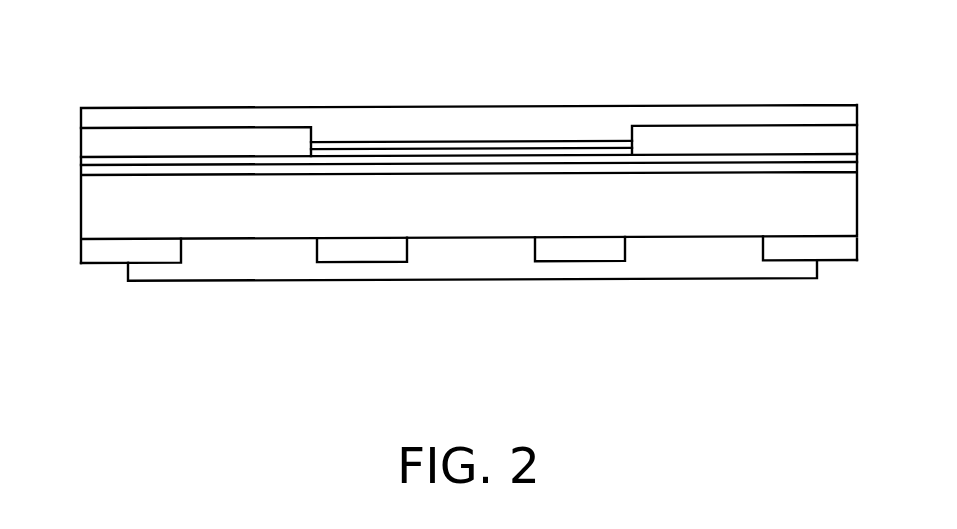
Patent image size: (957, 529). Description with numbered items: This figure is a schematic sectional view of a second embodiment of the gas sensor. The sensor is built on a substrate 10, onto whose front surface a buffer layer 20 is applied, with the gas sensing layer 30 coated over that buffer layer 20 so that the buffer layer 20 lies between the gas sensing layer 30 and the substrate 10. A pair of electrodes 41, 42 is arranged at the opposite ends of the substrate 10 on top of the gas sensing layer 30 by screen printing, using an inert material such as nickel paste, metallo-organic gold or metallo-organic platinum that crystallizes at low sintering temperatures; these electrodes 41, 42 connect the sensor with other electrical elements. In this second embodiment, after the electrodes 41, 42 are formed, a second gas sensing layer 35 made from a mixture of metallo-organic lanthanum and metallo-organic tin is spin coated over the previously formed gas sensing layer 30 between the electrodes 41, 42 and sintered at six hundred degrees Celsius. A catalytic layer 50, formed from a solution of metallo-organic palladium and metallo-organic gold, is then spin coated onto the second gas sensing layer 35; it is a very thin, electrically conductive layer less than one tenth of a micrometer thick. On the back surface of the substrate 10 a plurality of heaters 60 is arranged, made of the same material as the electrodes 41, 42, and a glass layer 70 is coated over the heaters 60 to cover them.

The substrate 10 is at (837, 210).
The buffer layer 20 is at (851, 167).
The gas sensing layer 30 is at (850, 157).
The second gas sensing layer 35 is at (398, 127).
The electrode 41 is at (762, 133).
The electrode 42 is at (167, 136).
The catalytic layer 50 is at (462, 152).
The heaters 60 is at (99, 255).
The glass layer 70 is at (253, 272).